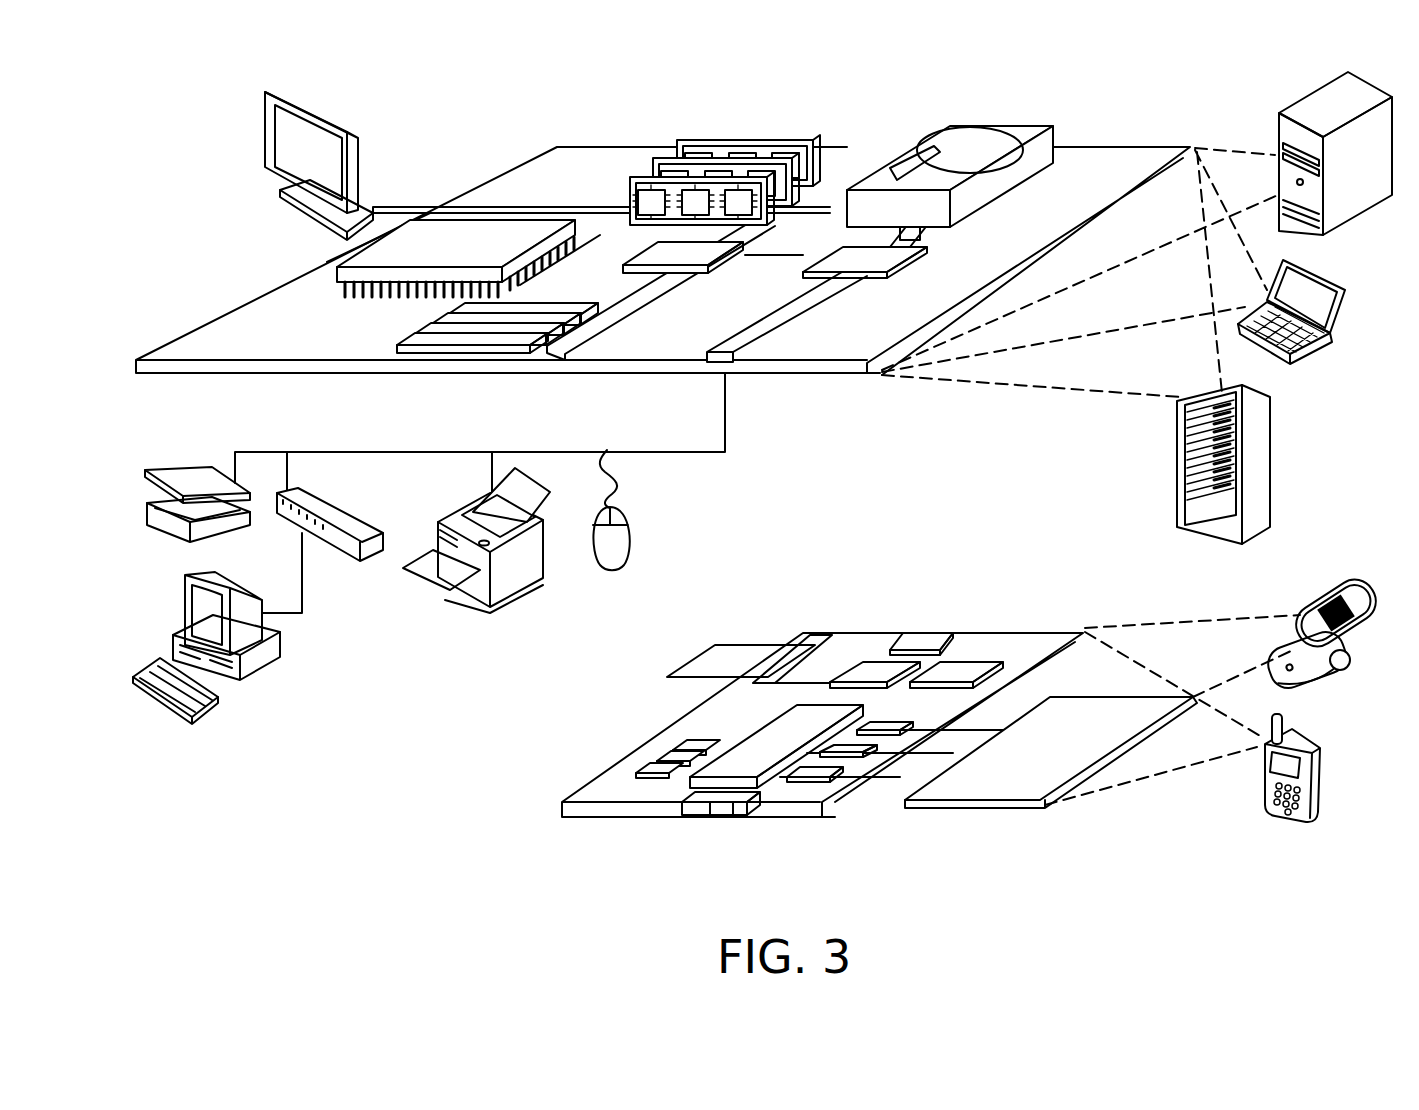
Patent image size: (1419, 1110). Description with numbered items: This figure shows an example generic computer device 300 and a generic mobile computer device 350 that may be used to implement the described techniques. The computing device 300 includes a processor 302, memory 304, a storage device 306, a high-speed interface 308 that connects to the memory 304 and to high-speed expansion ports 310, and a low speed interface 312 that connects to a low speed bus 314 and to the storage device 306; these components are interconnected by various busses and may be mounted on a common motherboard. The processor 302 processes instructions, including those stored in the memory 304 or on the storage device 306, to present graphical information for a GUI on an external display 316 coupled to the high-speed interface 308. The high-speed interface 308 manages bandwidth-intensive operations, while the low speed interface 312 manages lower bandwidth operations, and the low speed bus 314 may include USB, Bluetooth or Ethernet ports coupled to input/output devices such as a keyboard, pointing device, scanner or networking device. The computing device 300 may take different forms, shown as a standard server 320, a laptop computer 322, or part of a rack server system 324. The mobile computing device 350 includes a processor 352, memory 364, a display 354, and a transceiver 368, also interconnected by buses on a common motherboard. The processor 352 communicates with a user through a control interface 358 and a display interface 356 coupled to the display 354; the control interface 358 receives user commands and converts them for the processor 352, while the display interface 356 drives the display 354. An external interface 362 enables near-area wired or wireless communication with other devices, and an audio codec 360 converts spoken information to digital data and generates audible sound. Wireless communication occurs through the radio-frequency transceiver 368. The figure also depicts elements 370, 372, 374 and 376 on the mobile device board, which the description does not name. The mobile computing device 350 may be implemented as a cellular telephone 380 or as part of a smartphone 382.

The computing device 300 is at (468, 112).
The processor 302 is at (337, 270).
The memory 304 is at (695, 147).
The storage device 306 is at (945, 131).
The high-speed interface 308 is at (657, 253).
The high-speed expansion ports 310 is at (413, 332).
The low speed interface 312 is at (848, 258).
The low speed bus 314 is at (738, 362).
The display 316 is at (270, 94).
The standard server 320 is at (1280, 127).
The laptop computer 322 is at (1347, 290).
The rack server system 324 is at (1182, 490).
The mobile computing device 350 is at (530, 818).
The processor 352 is at (747, 770).
The display 354 is at (998, 790).
The display interface 356 is at (824, 780).
The control interface 358 is at (857, 758).
The audio codec 360 is at (883, 730).
The external interface 362 is at (710, 815).
The memory 364 is at (655, 763).
The transceiver 368 is at (957, 675).
The antenna module 370 is at (925, 640).
The battery strip 372 is at (800, 648).
The battery plate 374 is at (720, 648).
The power module 376 is at (875, 676).
The cellular telephone 380 is at (1330, 586).
The smartphone 382 is at (1272, 772).